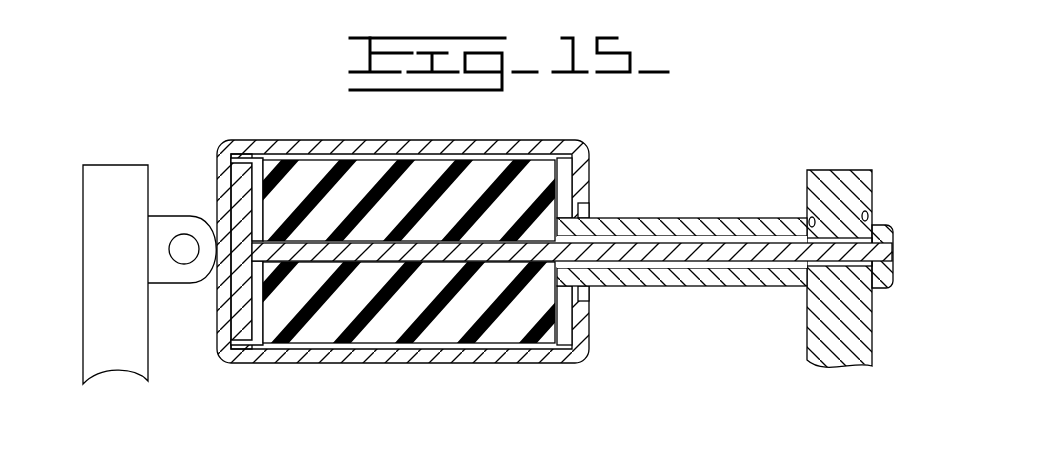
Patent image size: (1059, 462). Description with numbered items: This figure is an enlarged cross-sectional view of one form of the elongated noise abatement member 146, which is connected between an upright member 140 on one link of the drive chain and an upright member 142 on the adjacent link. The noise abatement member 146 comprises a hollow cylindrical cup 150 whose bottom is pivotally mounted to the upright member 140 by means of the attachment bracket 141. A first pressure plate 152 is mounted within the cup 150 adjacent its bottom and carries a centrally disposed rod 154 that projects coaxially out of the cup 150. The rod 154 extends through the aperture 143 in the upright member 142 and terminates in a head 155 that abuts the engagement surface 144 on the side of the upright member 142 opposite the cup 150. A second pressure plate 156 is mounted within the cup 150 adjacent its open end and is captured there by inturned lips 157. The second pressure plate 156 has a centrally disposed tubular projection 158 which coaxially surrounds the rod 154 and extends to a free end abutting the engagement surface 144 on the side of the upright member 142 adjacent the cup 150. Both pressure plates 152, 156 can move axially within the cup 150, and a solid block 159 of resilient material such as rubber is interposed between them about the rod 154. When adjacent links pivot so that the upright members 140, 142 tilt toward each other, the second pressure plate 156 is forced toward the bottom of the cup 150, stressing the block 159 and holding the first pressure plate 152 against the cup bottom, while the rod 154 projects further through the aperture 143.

The upright member 140 is at (143, 135).
The attachment bracket 141 is at (168, 230).
The upright member 142 is at (852, 145).
The aperture 143 is at (833, 282).
The engagement surface 144 is at (812, 218).
The elongated noise abatement member 146 is at (452, 376).
The cylindrical cup 150 is at (330, 141).
The first pressure plate 152 is at (238, 163).
The rod 154 is at (663, 253).
The head 155 is at (882, 277).
The second pressure plate 156 is at (588, 206).
The inturned lips 157 is at (580, 185).
The tubular projection 158 is at (712, 192).
The solid block of resilient material 159 is at (322, 328).